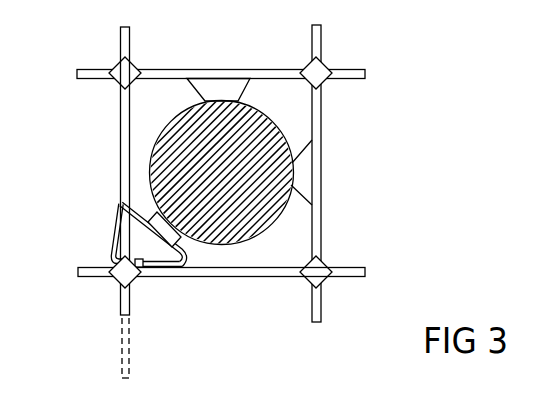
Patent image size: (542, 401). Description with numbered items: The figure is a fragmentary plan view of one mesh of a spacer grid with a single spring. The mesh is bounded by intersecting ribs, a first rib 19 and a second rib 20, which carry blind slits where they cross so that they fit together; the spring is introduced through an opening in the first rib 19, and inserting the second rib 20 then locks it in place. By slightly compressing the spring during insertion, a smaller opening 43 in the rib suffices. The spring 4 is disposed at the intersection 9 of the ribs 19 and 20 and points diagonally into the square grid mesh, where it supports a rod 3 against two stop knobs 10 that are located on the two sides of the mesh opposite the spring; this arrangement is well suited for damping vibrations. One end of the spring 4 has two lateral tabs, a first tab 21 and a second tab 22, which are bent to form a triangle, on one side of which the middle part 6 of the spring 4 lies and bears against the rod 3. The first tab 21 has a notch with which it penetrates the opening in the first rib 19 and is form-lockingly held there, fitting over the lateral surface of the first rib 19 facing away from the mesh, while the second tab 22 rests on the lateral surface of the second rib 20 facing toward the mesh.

The rod 3 is at (269, 134).
The spring 4 is at (120, 212).
The middle part 6 is at (184, 245).
The intersection 9 is at (112, 283).
The stop knob 10 is at (211, 91).
The first rib 19 is at (120, 126).
The second rib 20 is at (256, 278).
The first tab 21 is at (114, 240).
The second tab 22 is at (157, 268).
The opening 43 is at (124, 329).